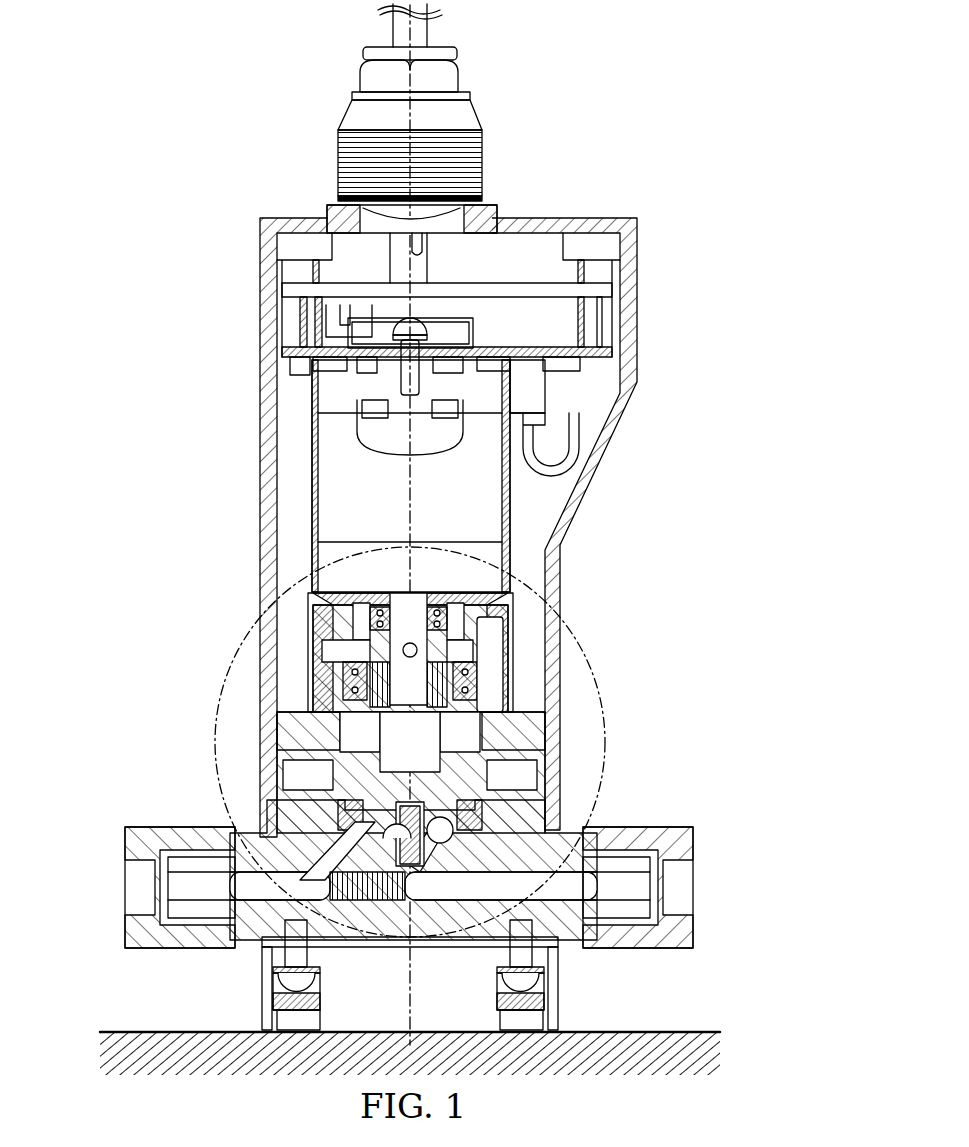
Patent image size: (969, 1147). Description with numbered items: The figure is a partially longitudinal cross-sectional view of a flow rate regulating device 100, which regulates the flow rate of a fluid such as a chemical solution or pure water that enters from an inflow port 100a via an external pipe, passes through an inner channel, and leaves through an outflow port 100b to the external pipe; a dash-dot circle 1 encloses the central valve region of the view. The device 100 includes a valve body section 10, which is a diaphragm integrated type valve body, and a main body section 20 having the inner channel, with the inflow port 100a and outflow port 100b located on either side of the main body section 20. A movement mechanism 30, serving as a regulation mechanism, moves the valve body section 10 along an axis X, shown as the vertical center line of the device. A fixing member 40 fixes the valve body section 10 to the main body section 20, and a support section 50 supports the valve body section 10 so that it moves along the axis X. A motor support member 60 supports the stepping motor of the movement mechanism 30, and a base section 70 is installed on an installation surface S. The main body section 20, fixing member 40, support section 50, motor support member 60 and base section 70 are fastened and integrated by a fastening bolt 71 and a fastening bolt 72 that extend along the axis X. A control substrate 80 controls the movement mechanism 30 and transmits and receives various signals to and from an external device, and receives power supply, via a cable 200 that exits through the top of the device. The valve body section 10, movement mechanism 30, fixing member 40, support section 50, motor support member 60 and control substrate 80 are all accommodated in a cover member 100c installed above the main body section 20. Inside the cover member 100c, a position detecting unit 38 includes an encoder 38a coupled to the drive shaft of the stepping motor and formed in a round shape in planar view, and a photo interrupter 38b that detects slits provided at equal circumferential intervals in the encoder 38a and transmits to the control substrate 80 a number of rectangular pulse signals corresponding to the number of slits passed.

The valve device 1 is at (592, 682).
The valve body section 10 is at (380, 925).
The main body section 20 is at (413, 911).
The movement mechanism 30 is at (312, 668).
The position detecting unit 38 is at (480, 329).
The encoder 38a is at (454, 318).
The photo interrupter 38b is at (356, 318).
The fixing member 40 is at (540, 780).
The support section 50 is at (540, 728).
The motor support member 60 is at (547, 605).
The base section 70 is at (560, 1027).
The fastening bolt 71 is at (272, 990).
The fastening bolt 72 is at (548, 985).
The control substrate 80 is at (536, 283).
The flow rate regulating device 100 is at (410, 524).
The inflow port 100a is at (730, 878).
The outflow port 100b is at (137, 907).
The cover member 100c is at (285, 213).
The cable 200 is at (440, 40).
The installation surface S is at (693, 1031).
The axis X is at (410, 475).